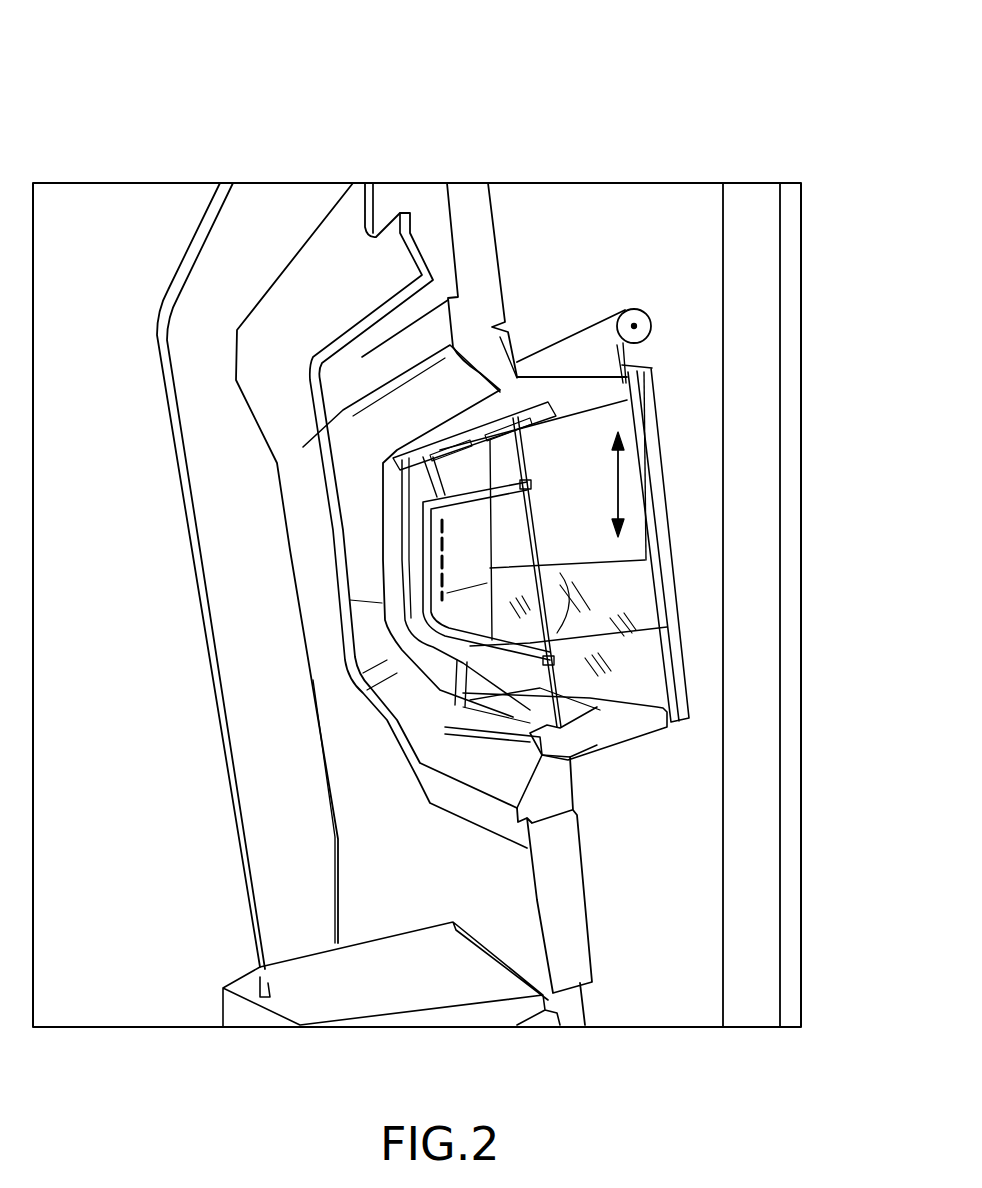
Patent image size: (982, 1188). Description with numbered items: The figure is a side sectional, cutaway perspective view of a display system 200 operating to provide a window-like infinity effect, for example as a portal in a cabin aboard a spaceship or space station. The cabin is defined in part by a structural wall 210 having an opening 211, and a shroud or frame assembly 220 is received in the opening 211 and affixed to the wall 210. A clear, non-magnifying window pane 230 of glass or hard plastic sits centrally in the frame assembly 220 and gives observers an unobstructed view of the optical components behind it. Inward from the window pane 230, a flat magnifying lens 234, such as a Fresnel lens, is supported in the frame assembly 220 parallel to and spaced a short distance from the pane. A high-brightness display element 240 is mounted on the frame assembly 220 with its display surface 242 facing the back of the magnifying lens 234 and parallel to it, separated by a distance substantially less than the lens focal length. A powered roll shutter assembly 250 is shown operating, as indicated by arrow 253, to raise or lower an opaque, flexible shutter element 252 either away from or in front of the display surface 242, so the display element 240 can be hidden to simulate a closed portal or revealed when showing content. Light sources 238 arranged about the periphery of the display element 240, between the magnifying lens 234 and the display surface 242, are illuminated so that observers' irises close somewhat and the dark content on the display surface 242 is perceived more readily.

The display system 200 is at (743, 104).
The structural wall 210 is at (496, 218).
The opening 211 is at (498, 346).
The frame assembly 220 is at (582, 813).
The window pane 230 is at (402, 650).
The magnifying lens 234 is at (485, 690).
The light sources 238 is at (520, 712).
The display element 240 is at (673, 430).
The display surface 242 is at (647, 645).
The roll shutter assembly 250 is at (648, 302).
The shutter element 252 is at (641, 367).
The arrow 253 is at (617, 500).